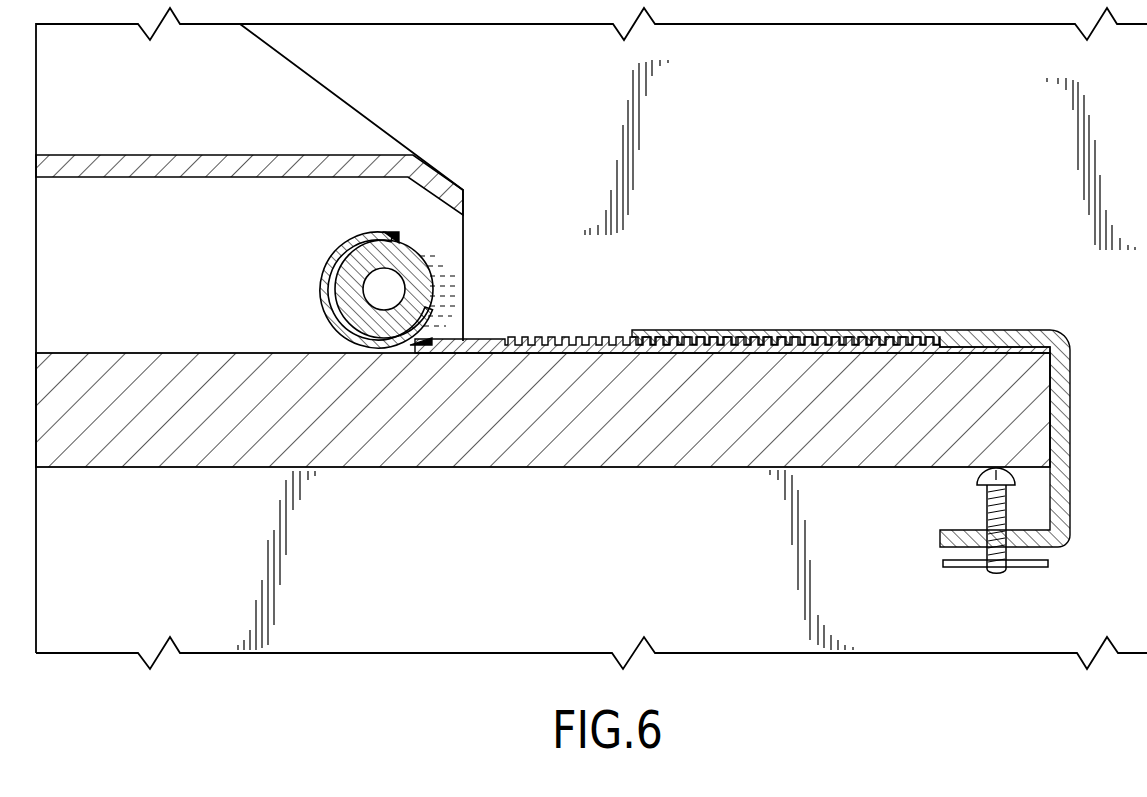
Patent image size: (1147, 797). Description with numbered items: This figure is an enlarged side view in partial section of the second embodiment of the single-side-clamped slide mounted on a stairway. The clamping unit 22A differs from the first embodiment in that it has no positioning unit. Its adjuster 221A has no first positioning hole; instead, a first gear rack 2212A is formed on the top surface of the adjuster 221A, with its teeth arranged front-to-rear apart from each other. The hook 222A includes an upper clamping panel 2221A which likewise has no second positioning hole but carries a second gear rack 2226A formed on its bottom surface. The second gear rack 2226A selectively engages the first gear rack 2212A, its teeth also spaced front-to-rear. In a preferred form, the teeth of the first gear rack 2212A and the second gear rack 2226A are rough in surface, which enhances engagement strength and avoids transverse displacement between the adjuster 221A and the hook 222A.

The clamping unit 22A is at (713, 244).
The adjuster 221A is at (487, 343).
The first gear rack 2212A is at (590, 339).
The upper clamping panel 2221A is at (951, 333).
The second gear rack 2226A is at (802, 337).
The hook 222A is at (1012, 326).